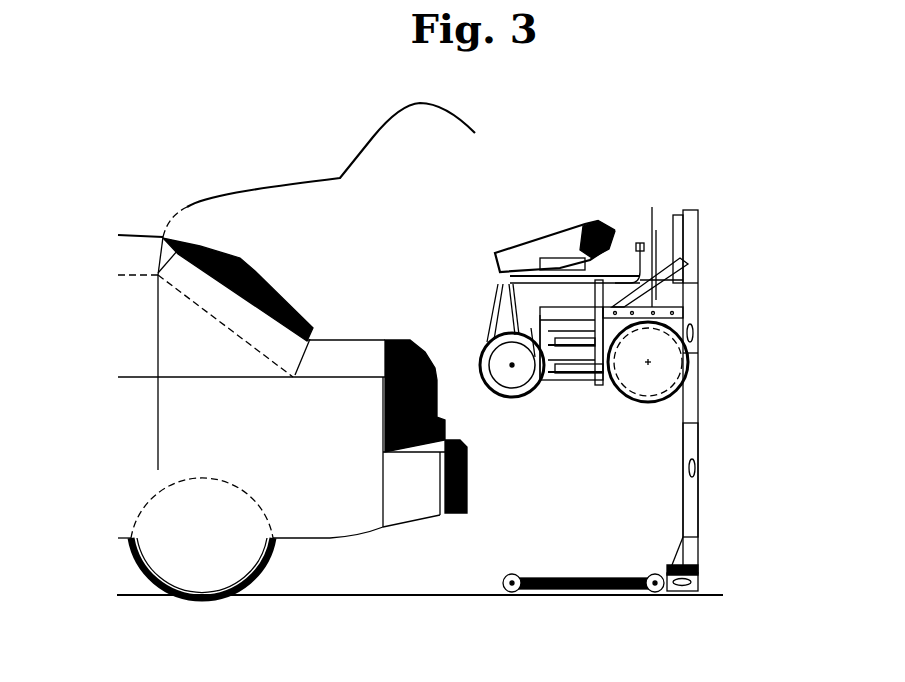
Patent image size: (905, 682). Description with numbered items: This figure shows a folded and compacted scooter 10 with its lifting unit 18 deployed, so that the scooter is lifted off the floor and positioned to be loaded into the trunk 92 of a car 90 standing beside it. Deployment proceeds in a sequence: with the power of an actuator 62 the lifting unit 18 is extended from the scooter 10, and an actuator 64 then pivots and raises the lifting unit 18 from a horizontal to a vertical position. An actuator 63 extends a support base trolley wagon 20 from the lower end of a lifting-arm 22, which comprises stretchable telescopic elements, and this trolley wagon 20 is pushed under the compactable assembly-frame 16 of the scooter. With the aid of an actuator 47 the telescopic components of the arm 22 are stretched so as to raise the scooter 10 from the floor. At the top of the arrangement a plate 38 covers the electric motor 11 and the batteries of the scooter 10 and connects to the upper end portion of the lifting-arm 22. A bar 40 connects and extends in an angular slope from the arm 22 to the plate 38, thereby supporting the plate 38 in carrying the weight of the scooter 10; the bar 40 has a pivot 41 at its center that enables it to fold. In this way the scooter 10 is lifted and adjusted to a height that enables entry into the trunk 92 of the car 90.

The car 90 is at (173, 213).
The trunk 92 is at (392, 340).
The scooter 10 is at (527, 232).
The electric motor 11 is at (572, 350).
The assembly-frame 16 is at (582, 373).
The plate 38 is at (690, 285).
The actuator 62 is at (693, 308).
The actuator 64 is at (697, 330).
The bar 40 is at (677, 215).
The pivot 41 is at (652, 235).
The lifting unit 18 is at (707, 368).
The actuator 47 is at (698, 462).
The lifting-arm 22 is at (688, 510).
The support base trolley wagon 20 is at (597, 590).
The actuator 63 is at (677, 588).